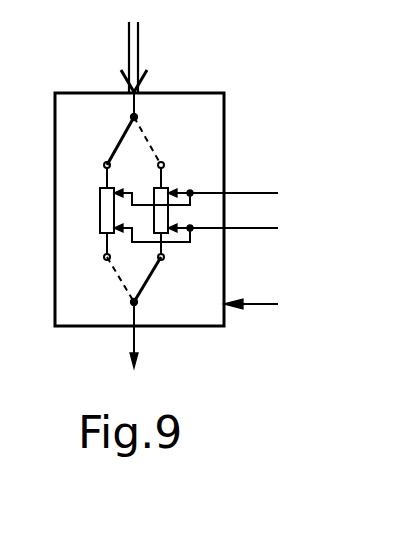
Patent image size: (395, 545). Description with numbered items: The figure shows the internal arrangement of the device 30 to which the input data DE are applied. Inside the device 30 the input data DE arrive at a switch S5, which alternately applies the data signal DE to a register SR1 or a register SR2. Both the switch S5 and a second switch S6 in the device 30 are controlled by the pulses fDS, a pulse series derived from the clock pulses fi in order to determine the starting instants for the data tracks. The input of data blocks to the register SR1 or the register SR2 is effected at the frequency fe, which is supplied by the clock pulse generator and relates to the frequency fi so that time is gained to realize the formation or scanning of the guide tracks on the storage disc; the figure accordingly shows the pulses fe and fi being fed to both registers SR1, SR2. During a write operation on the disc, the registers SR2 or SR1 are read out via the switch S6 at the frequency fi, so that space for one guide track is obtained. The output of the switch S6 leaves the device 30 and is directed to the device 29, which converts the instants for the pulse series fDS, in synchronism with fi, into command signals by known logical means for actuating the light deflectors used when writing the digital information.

The device 30 is at (213, 110).
The input data DE is at (140, 57).
The switch S5 is at (139, 130).
The register SR2 is at (99, 197).
The register SR1 is at (165, 192).
The pulses fe is at (210, 193).
The clock pulse frequency fi is at (208, 228).
The pulse series fDS is at (271, 305).
The switch S6 is at (143, 280).
The device 29 is at (142, 362).